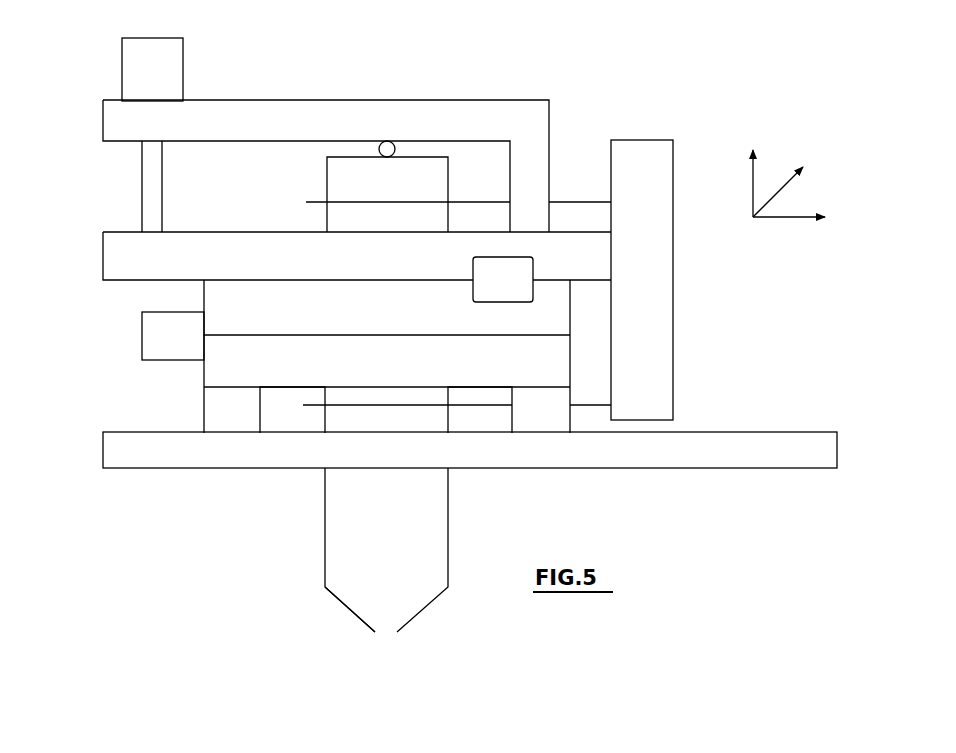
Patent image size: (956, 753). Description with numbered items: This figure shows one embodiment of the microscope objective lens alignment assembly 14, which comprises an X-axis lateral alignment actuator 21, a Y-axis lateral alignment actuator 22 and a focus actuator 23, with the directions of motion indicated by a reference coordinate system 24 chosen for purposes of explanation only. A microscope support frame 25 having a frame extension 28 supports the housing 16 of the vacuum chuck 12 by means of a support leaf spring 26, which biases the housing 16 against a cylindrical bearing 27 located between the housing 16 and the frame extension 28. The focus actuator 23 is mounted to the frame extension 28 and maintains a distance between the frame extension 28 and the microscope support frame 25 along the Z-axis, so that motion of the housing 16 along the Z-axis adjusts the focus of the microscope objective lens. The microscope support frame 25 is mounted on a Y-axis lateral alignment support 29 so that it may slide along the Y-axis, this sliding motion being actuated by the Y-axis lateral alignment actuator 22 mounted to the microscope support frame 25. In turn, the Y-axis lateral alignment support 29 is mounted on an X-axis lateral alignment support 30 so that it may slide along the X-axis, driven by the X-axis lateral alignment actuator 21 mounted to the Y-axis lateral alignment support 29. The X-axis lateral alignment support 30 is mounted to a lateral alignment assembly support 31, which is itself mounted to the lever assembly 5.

The lever assembly 5 is at (103, 452).
The vacuum chuck 12 is at (305, 549).
The microscope objective lens alignment assembly 14 is at (512, 40).
The housing 16 is at (338, 600).
The X-axis lateral alignment actuator 21 is at (142, 340).
The Y-axis lateral alignment actuator 22 is at (485, 302).
The focus actuator 23 is at (142, 152).
The reference coordinate system 24 is at (798, 218).
The microscope support frame 25 is at (640, 140).
The support leaf spring 26 is at (570, 202).
The cylindrical bearing 27 is at (387, 141).
The frame extension 28 is at (232, 100).
The Y-axis lateral alignment support 29 is at (204, 300).
The X-axis lateral alignment support 30 is at (204, 378).
The lateral alignment assembly support 31 is at (204, 410).